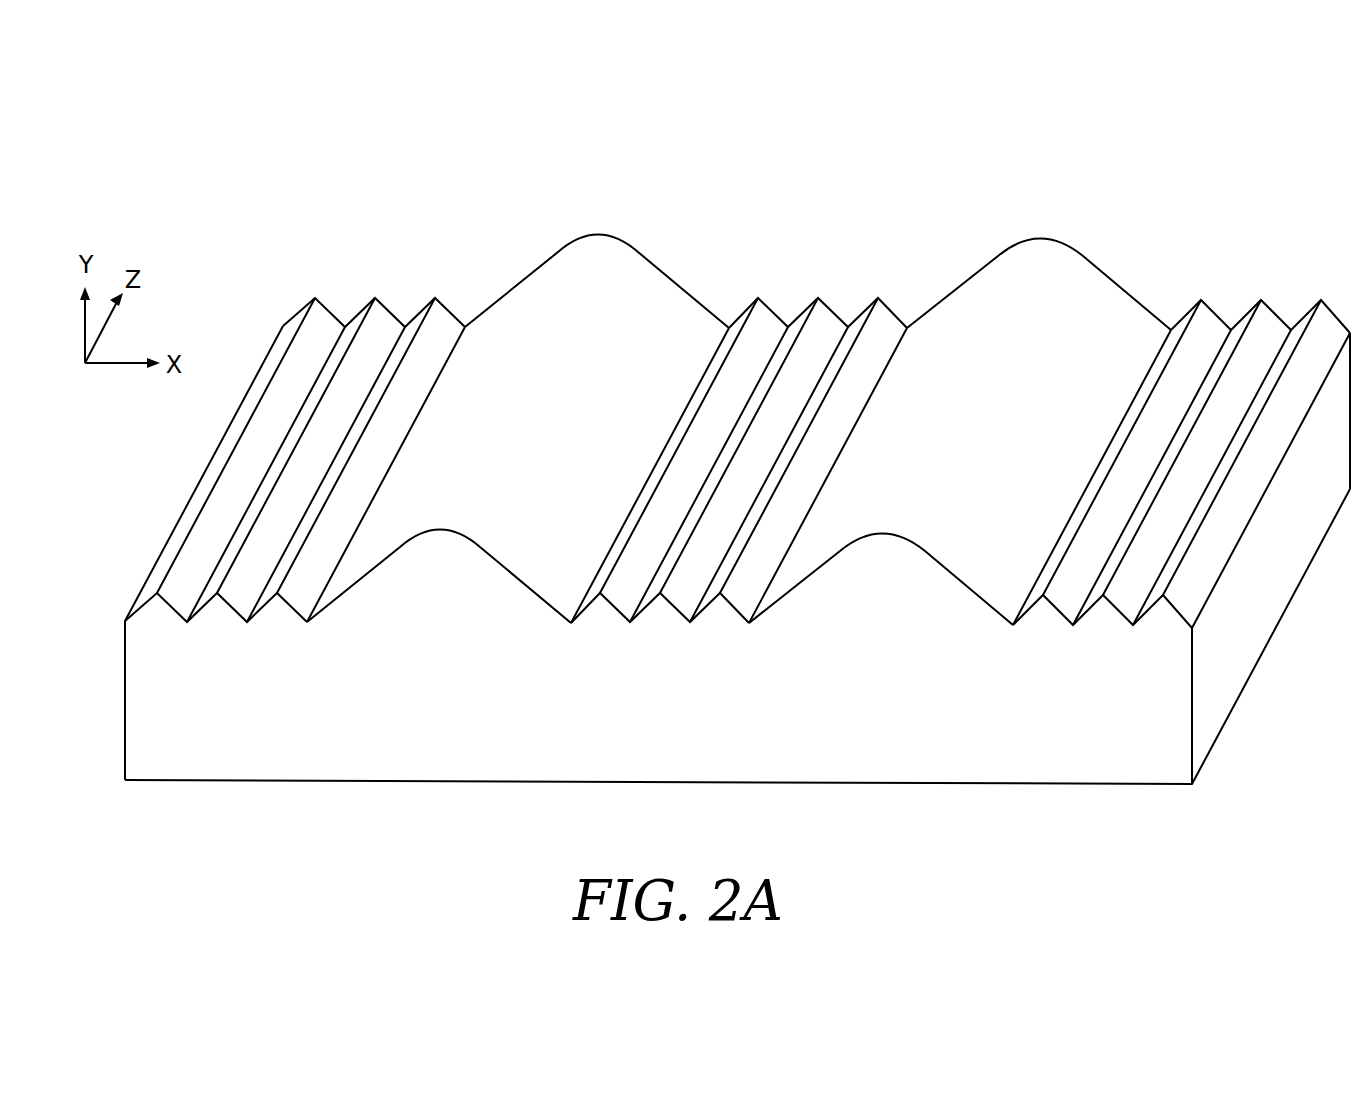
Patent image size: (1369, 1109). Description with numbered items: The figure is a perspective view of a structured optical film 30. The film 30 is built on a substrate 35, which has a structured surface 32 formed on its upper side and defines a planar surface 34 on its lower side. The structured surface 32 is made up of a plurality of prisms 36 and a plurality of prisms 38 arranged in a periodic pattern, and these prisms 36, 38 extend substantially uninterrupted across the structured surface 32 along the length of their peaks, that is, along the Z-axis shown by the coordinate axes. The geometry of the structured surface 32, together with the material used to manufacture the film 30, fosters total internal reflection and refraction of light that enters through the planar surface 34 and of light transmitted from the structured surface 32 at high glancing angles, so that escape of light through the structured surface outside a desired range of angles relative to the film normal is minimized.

The structured optical film 30 is at (1203, 178).
The structured surface 32 is at (1112, 272).
The planar surface 34 is at (703, 783).
The substrate 35 is at (575, 699).
The prisms 36 is at (315, 298).
The prisms 38 is at (658, 285).